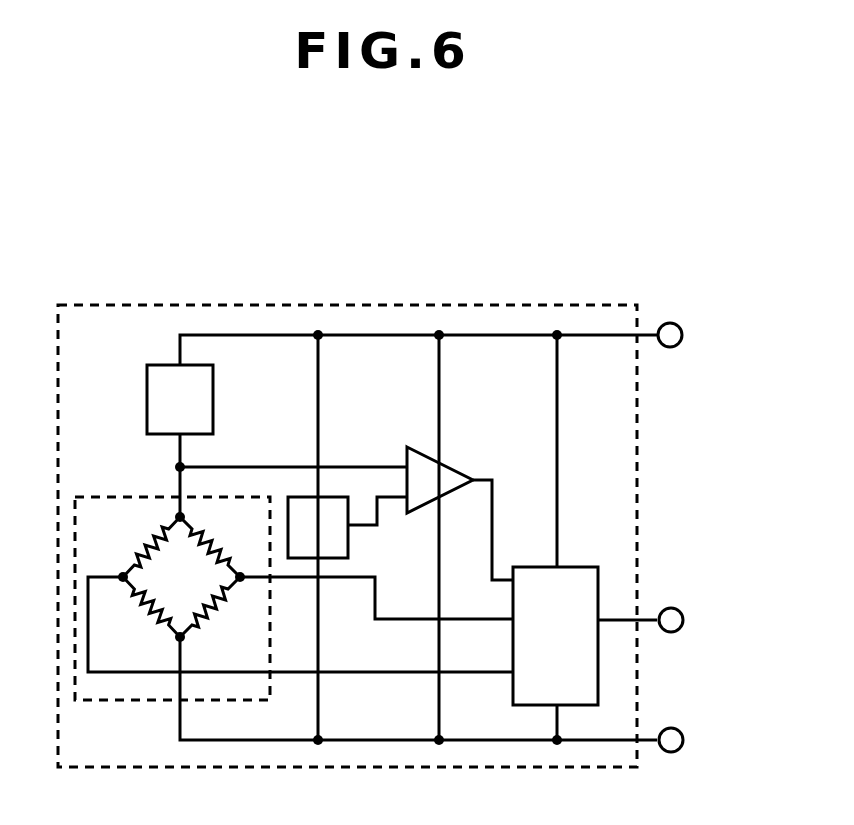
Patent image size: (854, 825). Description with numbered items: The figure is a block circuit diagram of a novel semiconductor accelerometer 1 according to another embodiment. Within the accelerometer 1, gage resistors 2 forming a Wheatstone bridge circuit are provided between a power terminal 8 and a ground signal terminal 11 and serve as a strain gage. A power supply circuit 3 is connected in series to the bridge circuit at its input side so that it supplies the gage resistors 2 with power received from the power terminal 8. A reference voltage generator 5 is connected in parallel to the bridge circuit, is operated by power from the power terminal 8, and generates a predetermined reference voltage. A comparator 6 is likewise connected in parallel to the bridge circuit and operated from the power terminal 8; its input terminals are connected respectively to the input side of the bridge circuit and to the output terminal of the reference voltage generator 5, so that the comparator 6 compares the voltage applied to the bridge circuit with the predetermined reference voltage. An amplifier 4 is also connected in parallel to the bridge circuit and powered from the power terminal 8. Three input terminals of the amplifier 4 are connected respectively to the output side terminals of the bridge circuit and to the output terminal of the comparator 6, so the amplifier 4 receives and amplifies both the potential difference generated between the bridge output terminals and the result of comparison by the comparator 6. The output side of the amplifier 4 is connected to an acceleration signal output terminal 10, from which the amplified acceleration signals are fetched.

The semiconductor accelerometer 1 is at (455, 305).
The gage resistors 2 is at (125, 497).
The power supply circuit 3 is at (147, 400).
The amplifier 4 is at (574, 567).
The reference voltage generator 5 is at (348, 542).
The comparator 6 is at (418, 447).
The power terminal 8 is at (680, 326).
The acceleration signal output terminal 10 is at (680, 611).
The ground signal terminal 11 is at (680, 730).